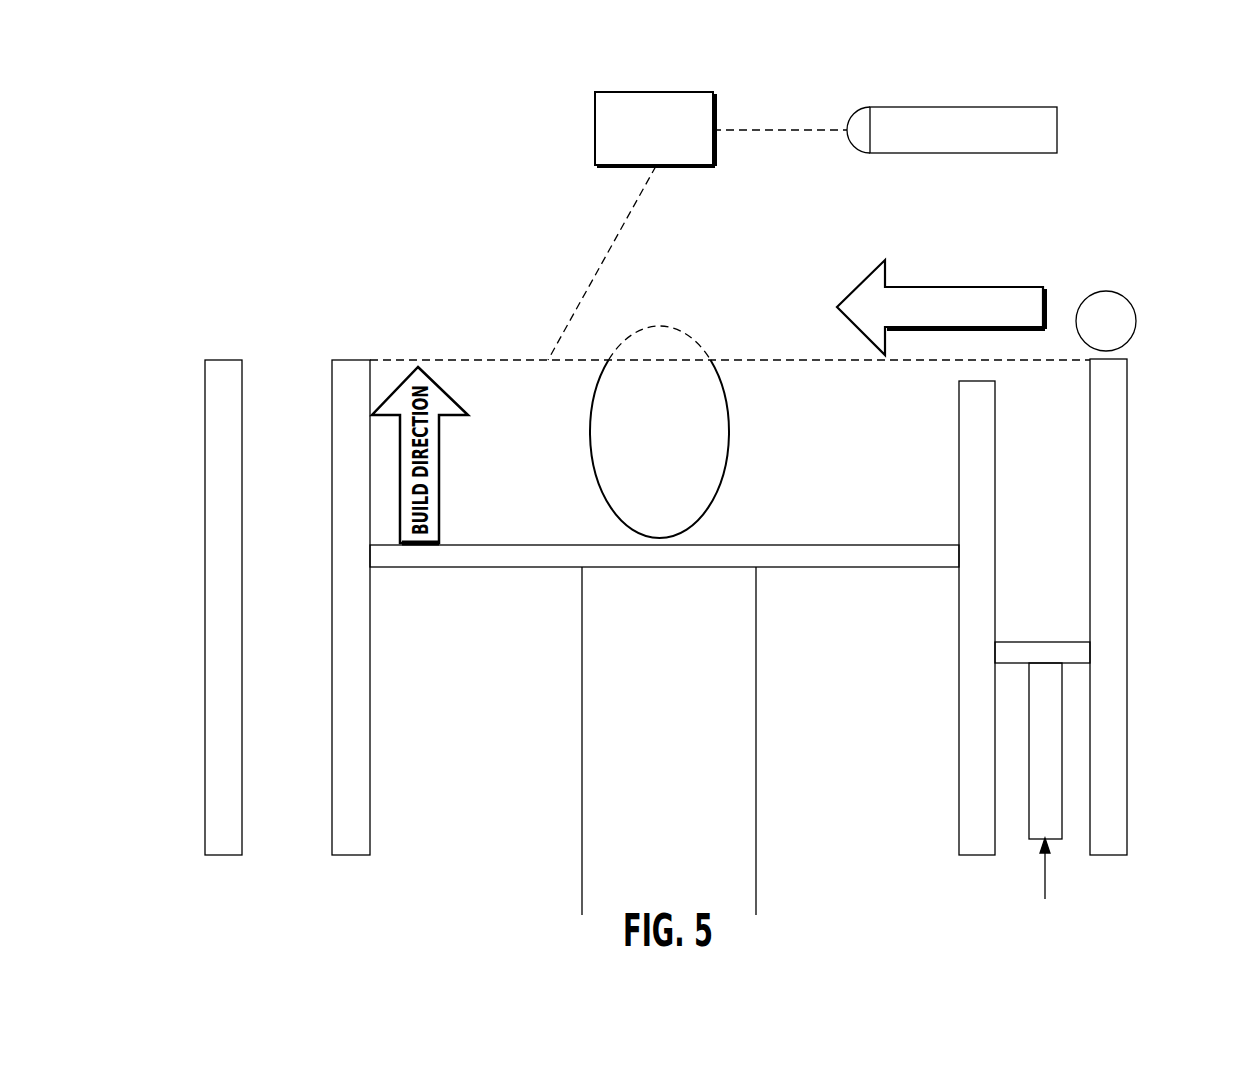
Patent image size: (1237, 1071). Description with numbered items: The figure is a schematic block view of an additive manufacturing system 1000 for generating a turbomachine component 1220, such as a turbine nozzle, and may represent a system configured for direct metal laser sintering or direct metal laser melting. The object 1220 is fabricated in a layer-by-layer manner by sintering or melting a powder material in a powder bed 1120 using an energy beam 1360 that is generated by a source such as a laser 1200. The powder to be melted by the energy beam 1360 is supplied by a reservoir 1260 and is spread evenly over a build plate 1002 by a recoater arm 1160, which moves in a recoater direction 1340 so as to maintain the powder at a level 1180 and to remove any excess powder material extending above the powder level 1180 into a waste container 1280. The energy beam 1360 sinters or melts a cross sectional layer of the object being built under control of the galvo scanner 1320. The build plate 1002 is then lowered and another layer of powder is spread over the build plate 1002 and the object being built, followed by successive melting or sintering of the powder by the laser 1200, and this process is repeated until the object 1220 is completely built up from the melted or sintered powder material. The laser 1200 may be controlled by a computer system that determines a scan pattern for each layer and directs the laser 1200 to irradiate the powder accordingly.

The additive manufacturing system 1000 is at (318, 113).
The build plate 1002 is at (906, 545).
The powder bed 1120 is at (814, 412).
The recoater arm 1160 is at (1105, 291).
The powder level 1180 is at (458, 359).
The laser 1200 is at (900, 107).
The turbomachine component 1220 is at (590, 418).
The reservoir 1260 is at (1066, 467).
The waste container 1280 is at (317, 730).
The galvo scanner 1320 is at (696, 92).
The recoater direction 1340 is at (860, 281).
The energy beam 1360 is at (605, 258).